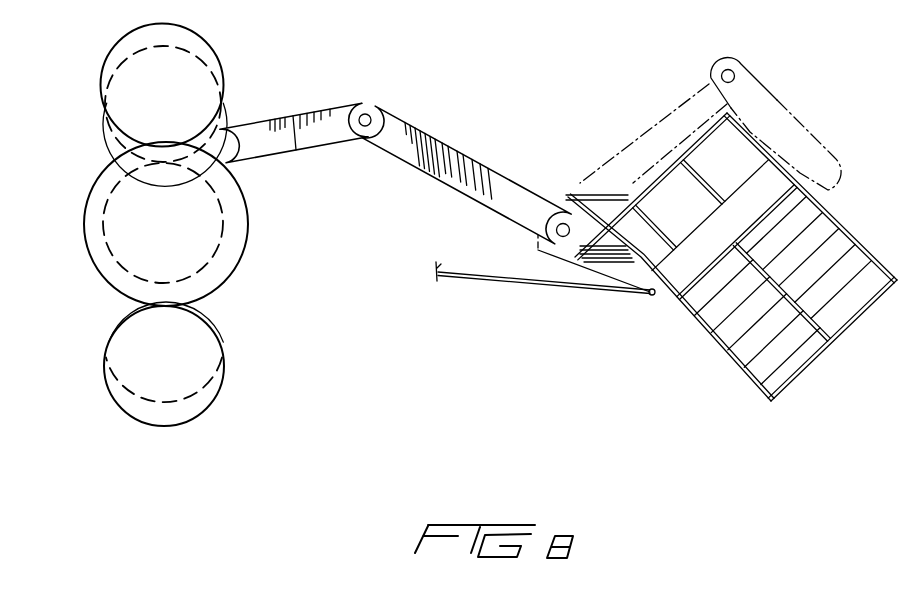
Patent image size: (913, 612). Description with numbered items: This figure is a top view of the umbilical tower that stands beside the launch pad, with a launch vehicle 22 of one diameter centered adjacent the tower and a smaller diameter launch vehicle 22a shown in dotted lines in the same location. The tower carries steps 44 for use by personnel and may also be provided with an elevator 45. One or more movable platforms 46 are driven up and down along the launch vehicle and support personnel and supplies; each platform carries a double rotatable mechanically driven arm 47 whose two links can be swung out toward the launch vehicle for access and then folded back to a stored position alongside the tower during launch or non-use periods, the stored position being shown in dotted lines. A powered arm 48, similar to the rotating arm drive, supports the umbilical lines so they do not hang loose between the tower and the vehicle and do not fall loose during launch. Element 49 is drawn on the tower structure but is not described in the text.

The launch vehicle 22 is at (96, 270).
The smaller diameter launch vehicle 22a is at (126, 271).
The steps 44 is at (833, 298).
The elevator 45 is at (742, 159).
The movable platform 46 is at (610, 257).
The double rotatable mechanically driven arm 47 is at (402, 160).
The arm 48 is at (502, 287).
The cross member 49 is at (665, 193).